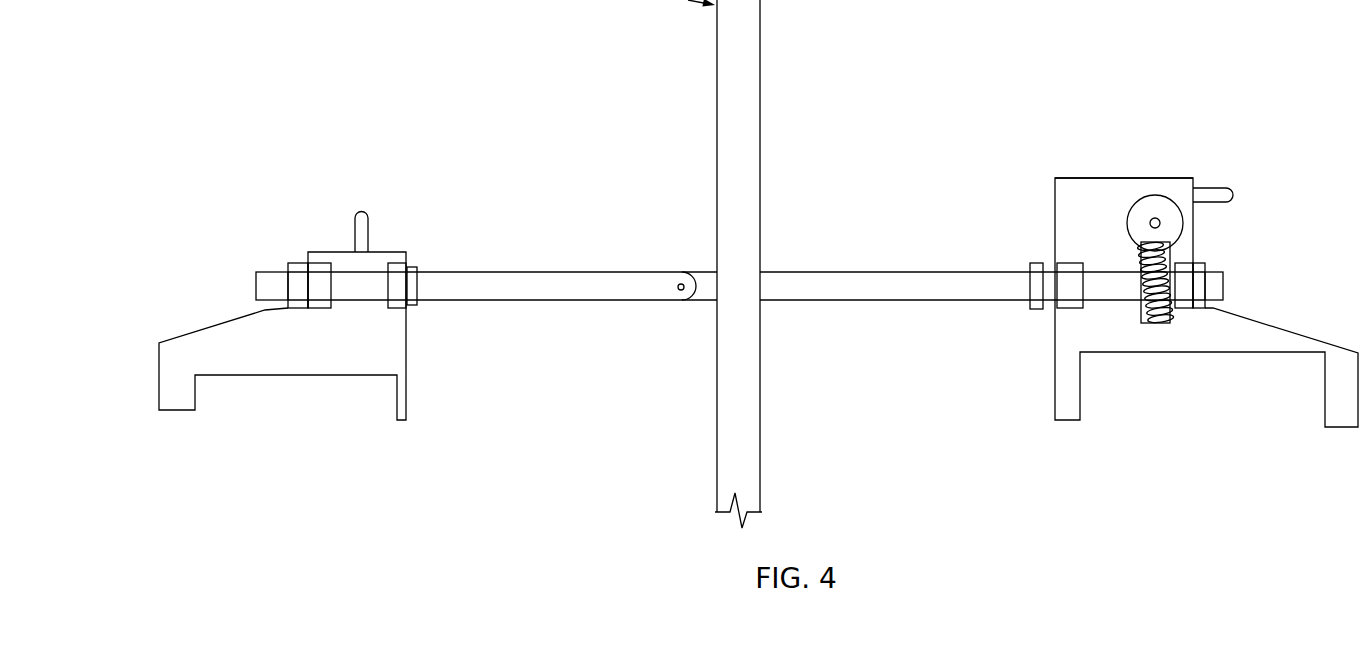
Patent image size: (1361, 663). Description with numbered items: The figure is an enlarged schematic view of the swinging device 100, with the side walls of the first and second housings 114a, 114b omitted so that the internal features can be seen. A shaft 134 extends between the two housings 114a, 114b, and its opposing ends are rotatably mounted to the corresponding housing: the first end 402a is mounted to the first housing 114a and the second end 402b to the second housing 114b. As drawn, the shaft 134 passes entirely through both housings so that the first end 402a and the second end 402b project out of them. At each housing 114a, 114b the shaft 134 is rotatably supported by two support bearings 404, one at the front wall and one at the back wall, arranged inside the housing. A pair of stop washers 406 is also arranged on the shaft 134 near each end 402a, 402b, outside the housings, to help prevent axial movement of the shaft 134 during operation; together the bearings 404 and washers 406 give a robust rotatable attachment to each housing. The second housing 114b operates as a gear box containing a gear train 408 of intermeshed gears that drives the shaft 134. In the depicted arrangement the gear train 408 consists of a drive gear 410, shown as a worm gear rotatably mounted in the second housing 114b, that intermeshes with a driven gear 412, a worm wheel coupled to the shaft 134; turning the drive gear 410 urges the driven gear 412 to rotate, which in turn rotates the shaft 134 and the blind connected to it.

The swinging device 100 is at (306, 56).
The shaft 134 is at (594, 266).
The first housing 114a is at (390, 242).
The second housing 114b is at (1060, 166).
The first end 402a is at (250, 279).
The second end 402b is at (1236, 280).
The support bearing 404 is at (322, 266).
The stop washer 406 is at (295, 266).
The gear train 408 is at (1120, 184).
The drive gear 410 is at (1160, 203).
The driven gear 412 is at (1152, 315).